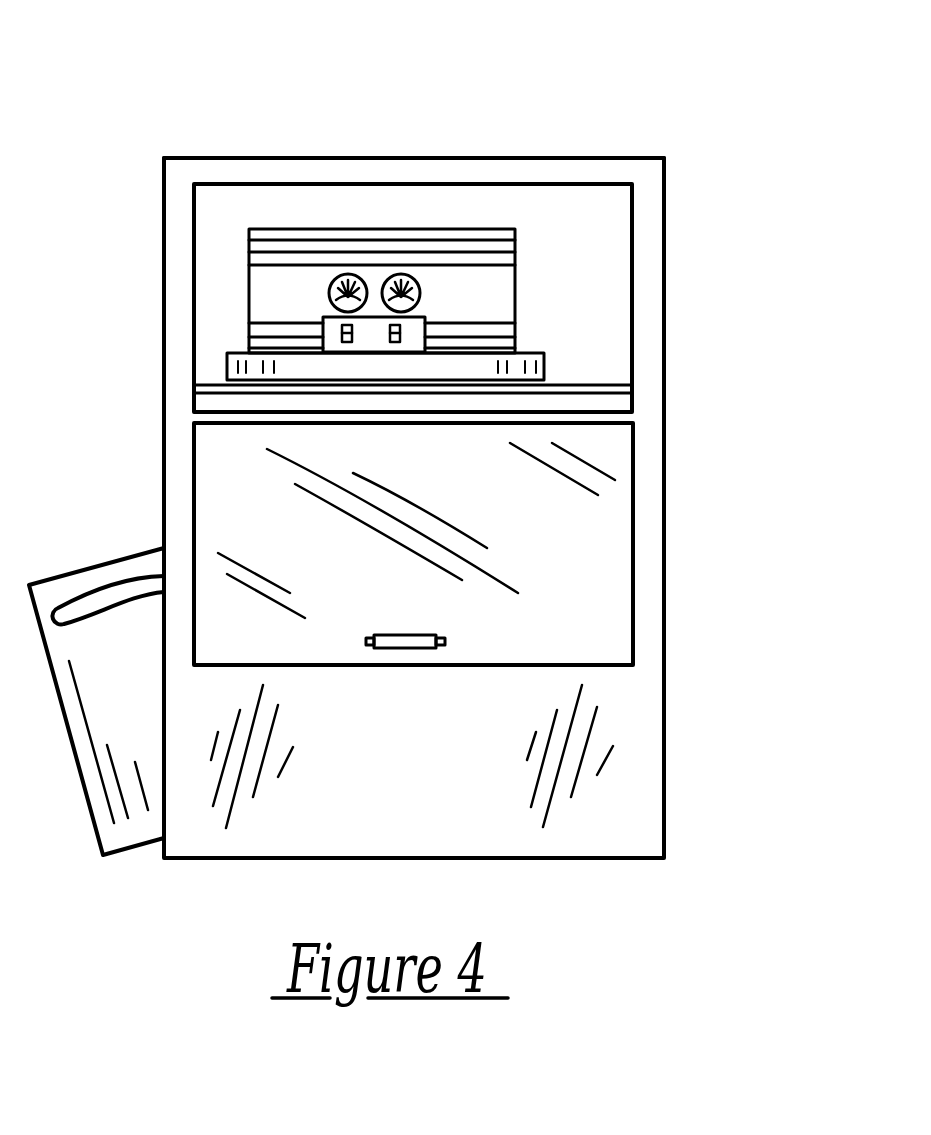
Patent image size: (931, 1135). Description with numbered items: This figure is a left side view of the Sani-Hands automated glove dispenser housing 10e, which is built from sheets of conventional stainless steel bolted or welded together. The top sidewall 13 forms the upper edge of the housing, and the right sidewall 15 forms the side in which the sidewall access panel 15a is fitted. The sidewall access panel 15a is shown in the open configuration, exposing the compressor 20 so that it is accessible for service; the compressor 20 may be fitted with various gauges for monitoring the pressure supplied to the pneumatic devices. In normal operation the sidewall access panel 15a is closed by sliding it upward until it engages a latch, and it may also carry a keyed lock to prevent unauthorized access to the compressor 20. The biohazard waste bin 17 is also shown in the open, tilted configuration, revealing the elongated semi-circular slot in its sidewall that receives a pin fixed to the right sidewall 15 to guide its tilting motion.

The cabinet housing 10e is at (562, 858).
The top sidewall 13 is at (487, 156).
The biohazard waste bin 17 is at (664, 345).
The compressor 20 is at (517, 270).
The sidewall access panel 15a is at (592, 567).
The right sidewall 15 is at (620, 765).